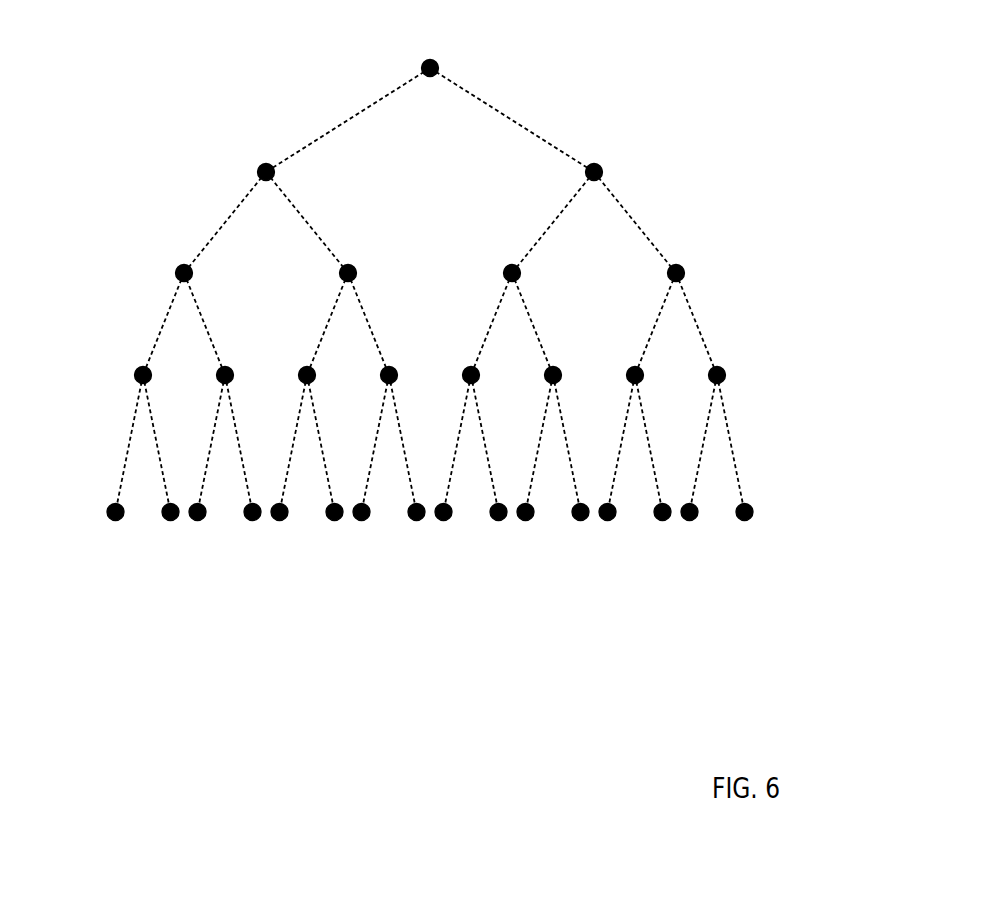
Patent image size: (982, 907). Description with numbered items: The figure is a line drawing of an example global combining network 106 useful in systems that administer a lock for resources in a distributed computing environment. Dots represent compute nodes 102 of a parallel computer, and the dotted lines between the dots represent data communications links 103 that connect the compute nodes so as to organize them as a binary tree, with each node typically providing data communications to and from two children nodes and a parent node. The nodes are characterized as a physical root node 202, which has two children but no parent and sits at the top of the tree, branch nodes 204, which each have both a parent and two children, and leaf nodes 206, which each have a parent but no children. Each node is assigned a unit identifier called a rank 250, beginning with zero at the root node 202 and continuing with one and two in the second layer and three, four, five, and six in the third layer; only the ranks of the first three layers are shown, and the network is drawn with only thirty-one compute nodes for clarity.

The compute nodes 102 is at (484, 365).
The data communications links 103 is at (357, 113).
The global combining network 106 is at (461, 365).
The physical root node 202 is at (552, 45).
The branch nodes 204 is at (765, 125).
The leaf nodes 206 is at (497, 520).
The rank 250 is at (557, 180).